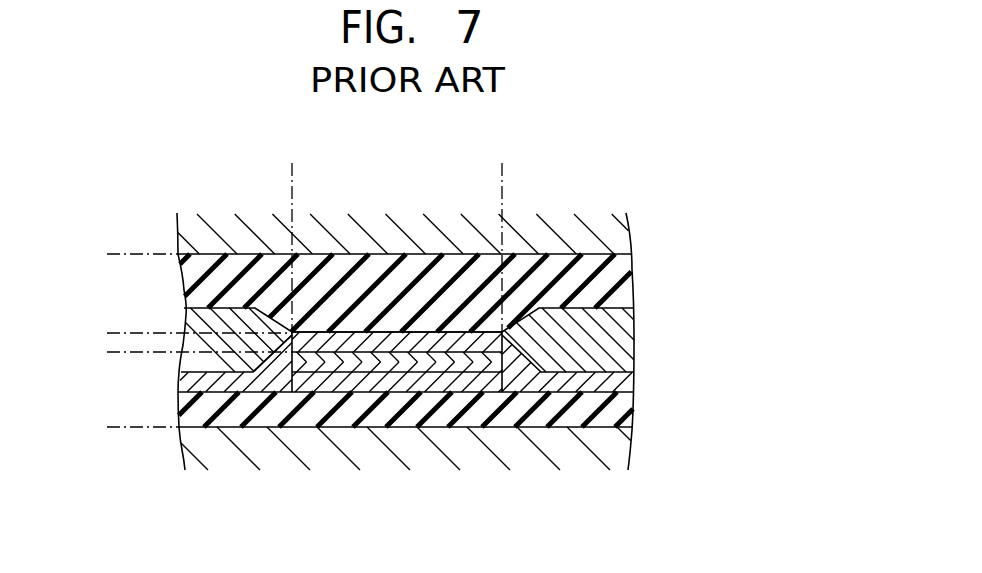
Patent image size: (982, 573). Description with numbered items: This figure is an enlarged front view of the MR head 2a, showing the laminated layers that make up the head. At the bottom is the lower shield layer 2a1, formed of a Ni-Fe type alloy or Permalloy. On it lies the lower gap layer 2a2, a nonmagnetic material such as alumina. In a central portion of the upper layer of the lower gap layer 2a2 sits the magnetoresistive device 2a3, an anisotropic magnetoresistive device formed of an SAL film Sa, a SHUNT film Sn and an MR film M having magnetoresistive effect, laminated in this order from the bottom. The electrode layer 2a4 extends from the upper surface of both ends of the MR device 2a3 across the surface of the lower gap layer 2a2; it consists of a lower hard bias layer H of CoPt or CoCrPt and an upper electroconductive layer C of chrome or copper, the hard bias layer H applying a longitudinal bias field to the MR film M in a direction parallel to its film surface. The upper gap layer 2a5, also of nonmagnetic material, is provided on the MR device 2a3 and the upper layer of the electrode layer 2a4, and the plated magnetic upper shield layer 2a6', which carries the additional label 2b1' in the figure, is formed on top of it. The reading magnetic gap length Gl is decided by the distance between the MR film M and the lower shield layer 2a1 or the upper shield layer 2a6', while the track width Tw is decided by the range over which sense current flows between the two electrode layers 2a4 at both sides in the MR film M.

The MR head 2a is at (822, 217).
The lower shield layer 2a1 is at (612, 453).
The lower gap layer 2a2 is at (604, 400).
The magnetoresistive (MR) device 2a3 is at (283, 384).
The electrode layer 2a4 is at (485, 351).
The electroconductive layer C is at (604, 337).
The hard bias layer H is at (604, 380).
The upper gap layer 2a5 is at (604, 288).
The upper shield layer 2a6' is at (486, 234).
The gap layer 2b1' is at (403, 234).
The MR film M is at (481, 357).
The SHUNT film Sn is at (430, 366).
The SAL film Sa is at (368, 380).
The track width Tw is at (494, 172).
The reading magnetic gap length Gl is at (122, 418).